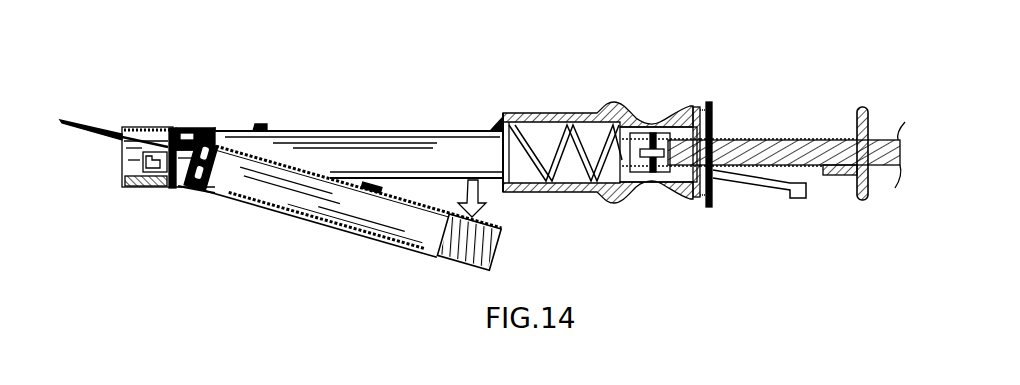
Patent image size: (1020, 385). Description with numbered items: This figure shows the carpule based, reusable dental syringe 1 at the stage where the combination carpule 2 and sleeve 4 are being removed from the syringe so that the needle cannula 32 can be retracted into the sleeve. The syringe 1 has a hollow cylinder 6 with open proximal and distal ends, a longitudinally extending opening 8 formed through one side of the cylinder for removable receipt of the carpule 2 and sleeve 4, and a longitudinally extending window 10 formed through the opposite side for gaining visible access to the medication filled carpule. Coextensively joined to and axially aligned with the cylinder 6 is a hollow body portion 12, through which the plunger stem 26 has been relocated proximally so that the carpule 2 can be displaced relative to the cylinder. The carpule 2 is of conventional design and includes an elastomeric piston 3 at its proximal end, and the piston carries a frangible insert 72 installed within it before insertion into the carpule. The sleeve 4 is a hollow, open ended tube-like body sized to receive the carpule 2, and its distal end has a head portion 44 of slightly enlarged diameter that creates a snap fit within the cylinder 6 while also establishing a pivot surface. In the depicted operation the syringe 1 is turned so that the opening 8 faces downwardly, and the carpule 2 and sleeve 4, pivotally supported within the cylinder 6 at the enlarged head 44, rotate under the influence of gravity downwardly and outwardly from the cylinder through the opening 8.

The dental syringe 1 is at (472, 75).
The carpule 2 is at (397, 246).
The piston 3 is at (462, 261).
The sleeve 4 is at (267, 210).
The cylinder 6 is at (192, 126).
The opening 8 is at (412, 177).
The window 10 is at (752, 140).
The body portion 12 is at (583, 114).
The plunger stem 26 is at (884, 132).
The needle cannula 32 is at (105, 131).
The head portion 44 is at (170, 187).
The frangible insert 72 is at (500, 248).